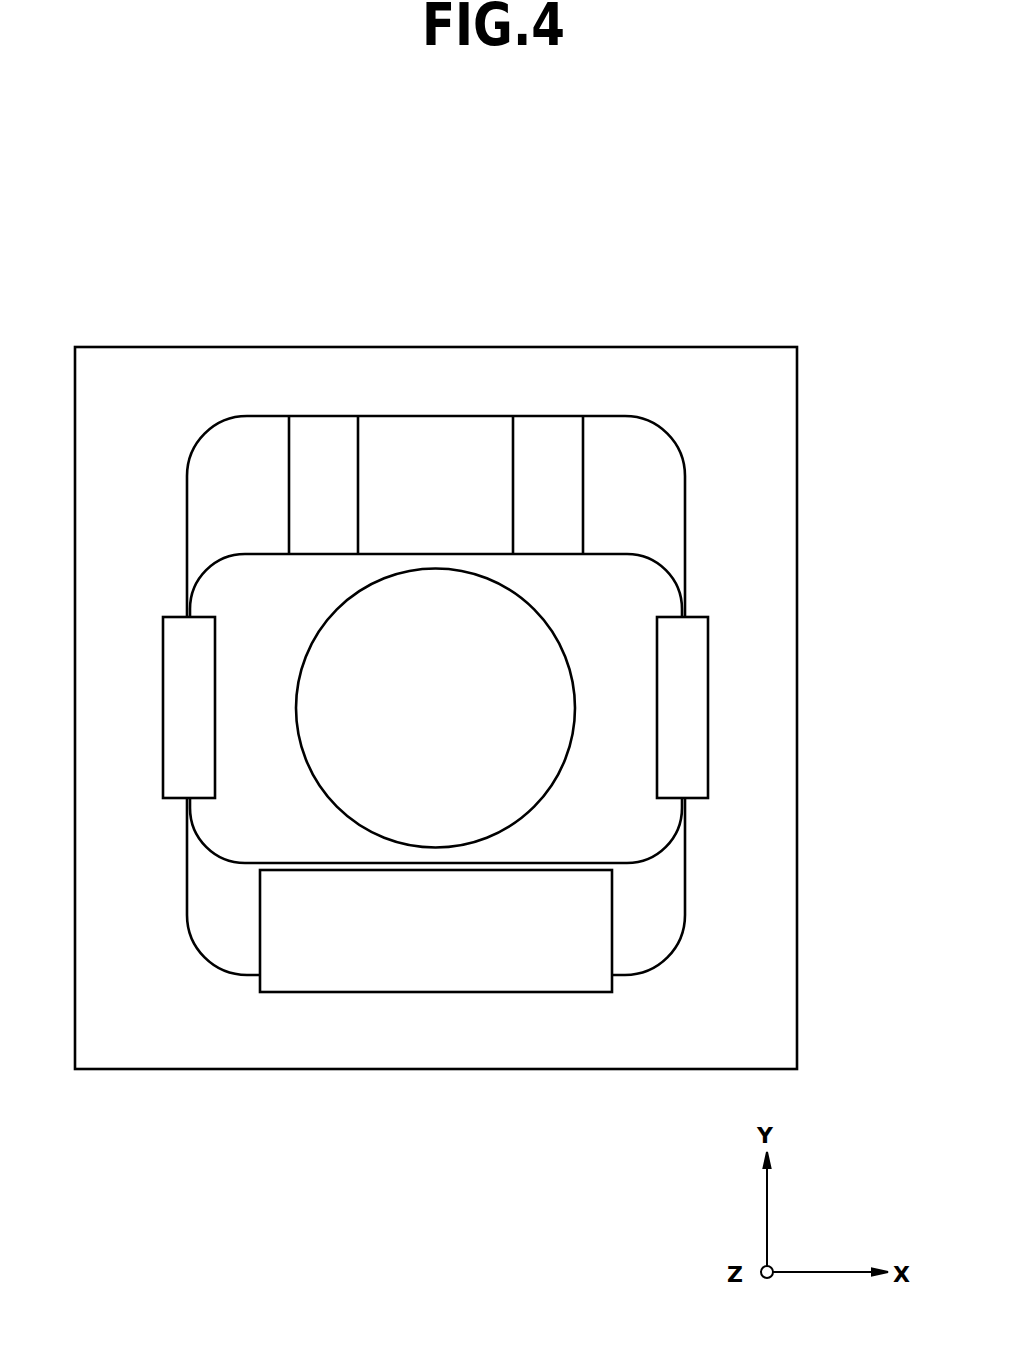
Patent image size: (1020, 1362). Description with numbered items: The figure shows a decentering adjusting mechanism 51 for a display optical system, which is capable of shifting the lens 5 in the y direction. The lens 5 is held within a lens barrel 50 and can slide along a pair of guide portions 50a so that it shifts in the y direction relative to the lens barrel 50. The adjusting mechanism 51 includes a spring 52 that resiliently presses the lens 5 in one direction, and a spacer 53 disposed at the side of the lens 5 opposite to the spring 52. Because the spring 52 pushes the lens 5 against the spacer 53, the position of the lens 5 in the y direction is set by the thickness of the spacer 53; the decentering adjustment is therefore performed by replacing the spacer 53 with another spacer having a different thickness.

The lens 5 is at (603, 588).
The lens barrel 50 is at (777, 1005).
The guide portions 50a is at (685, 733).
The adjusting mechanism 51 is at (603, 248).
The spring 52 is at (436, 389).
The spacer 53 is at (475, 953).